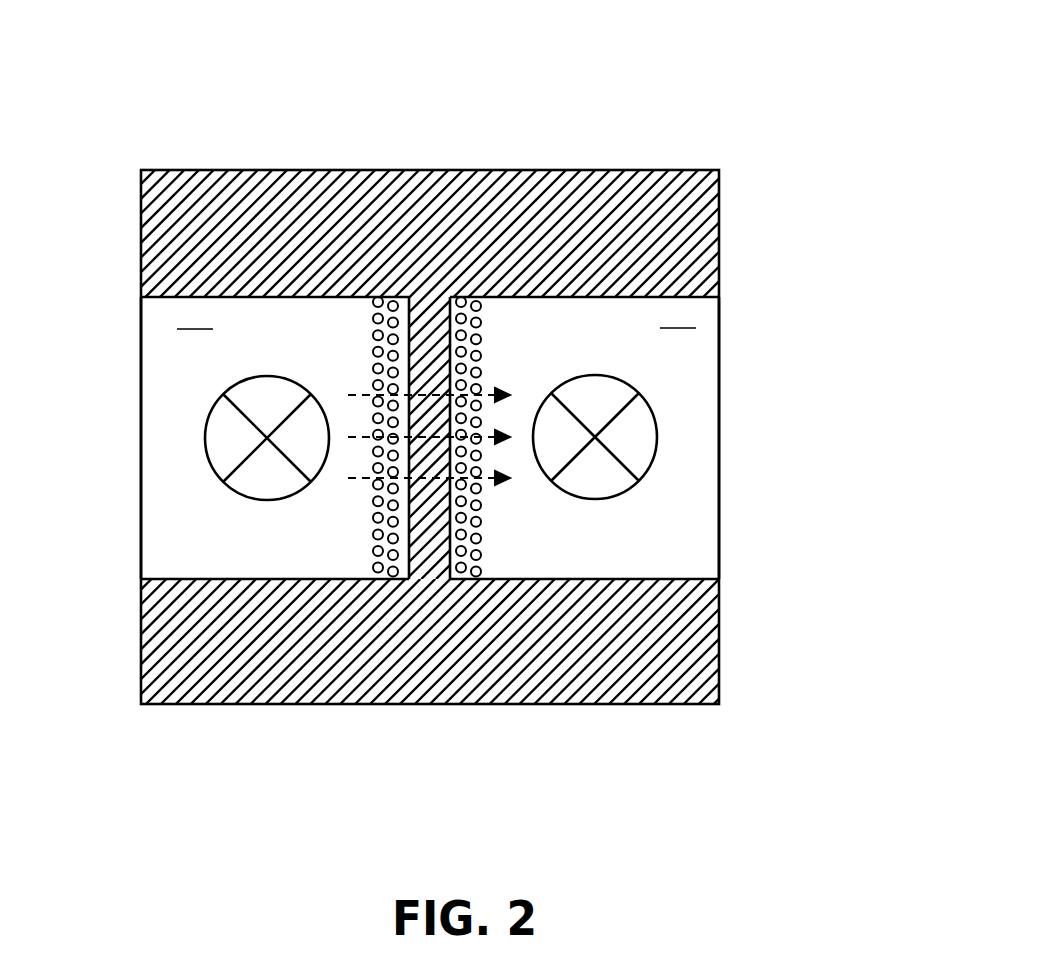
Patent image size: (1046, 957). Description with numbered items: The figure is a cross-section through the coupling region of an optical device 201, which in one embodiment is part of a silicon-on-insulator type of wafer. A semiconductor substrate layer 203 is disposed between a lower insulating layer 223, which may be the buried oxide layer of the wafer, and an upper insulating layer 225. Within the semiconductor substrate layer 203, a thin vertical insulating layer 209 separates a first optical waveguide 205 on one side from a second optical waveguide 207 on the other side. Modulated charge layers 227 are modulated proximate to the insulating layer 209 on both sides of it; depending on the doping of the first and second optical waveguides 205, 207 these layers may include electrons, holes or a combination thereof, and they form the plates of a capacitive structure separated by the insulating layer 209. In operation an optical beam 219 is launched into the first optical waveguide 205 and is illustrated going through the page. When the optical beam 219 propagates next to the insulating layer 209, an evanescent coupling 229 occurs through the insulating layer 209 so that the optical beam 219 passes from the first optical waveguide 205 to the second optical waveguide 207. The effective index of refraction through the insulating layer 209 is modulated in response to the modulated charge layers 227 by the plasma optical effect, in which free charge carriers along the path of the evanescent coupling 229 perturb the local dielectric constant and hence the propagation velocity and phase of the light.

The optical device 201 is at (778, 38).
The semiconductor substrate layer 203 is at (158, 540).
The first optical waveguide 205 is at (275, 438).
The second optical waveguide 207 is at (584, 438).
The insulating layer 209 is at (470, 313).
The optical beam 219 is at (203, 438).
The insulating layer 223 is at (707, 663).
The insulating layer 225 is at (705, 228).
The modulated charge layers 227 is at (375, 555).
The evanescent coupling 229 is at (367, 395).